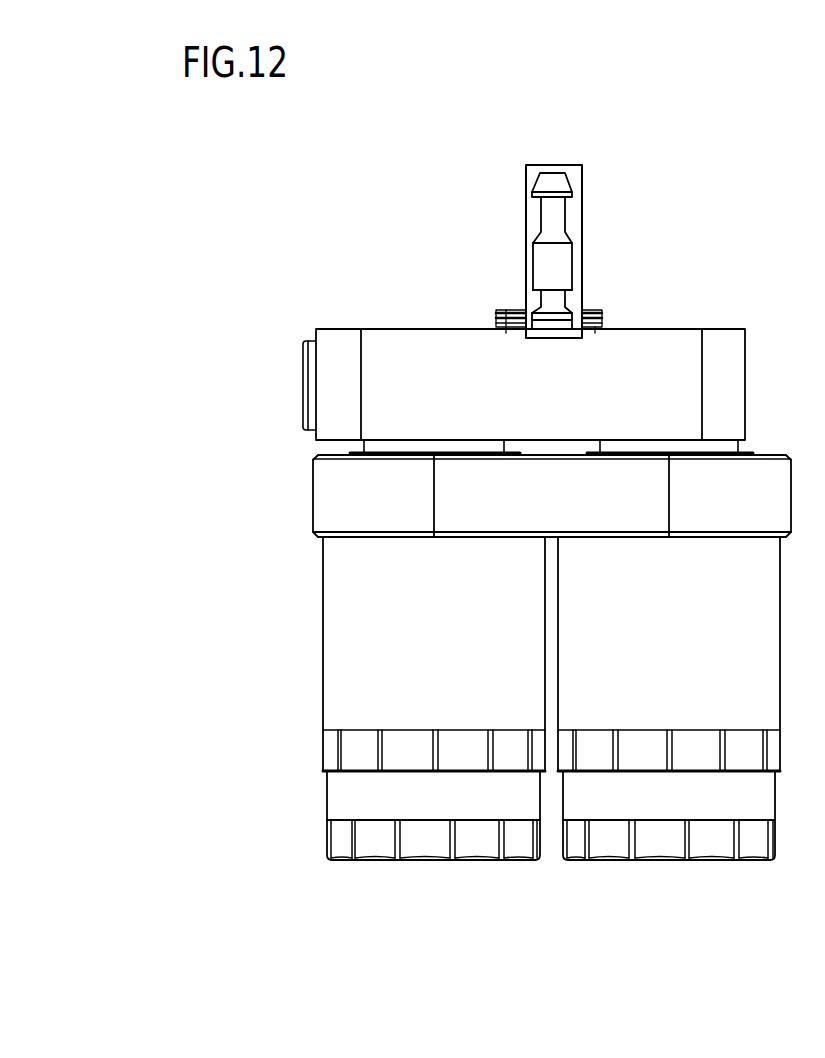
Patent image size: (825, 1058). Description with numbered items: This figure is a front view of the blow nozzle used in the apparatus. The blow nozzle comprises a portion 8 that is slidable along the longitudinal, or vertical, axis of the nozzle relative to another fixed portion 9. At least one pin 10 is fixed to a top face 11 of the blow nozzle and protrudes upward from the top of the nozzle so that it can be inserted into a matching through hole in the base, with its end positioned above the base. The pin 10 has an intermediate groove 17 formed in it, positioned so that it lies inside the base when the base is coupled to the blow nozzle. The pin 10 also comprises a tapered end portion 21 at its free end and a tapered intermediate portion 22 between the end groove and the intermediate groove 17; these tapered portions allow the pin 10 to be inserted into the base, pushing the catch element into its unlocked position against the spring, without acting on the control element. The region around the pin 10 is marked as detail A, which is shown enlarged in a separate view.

The slidable portion 8 is at (365, 684).
The fixed portion 9 is at (353, 388).
The pin 10 is at (520, 238).
The top face 11 is at (412, 330).
The intermediate groove 17 is at (481, 698).
The tapered end portion 21 is at (548, 179).
The tapered intermediate portion 22 is at (553, 241).
The detail A is at (583, 182).